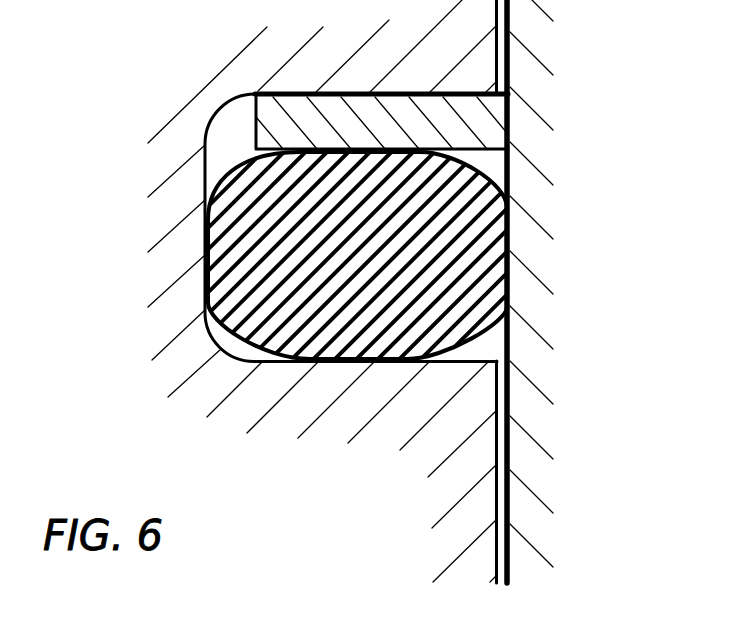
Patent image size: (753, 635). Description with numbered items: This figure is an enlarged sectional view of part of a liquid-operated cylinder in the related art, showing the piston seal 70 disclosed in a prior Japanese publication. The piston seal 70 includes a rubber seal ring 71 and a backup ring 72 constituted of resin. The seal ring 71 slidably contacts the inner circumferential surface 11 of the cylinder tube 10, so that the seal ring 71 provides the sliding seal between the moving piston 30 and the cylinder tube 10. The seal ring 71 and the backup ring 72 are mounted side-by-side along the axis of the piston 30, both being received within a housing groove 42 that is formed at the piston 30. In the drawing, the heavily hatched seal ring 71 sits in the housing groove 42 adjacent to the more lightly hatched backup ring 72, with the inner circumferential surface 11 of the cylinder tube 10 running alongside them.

The cylinder tube 10 is at (529, 556).
The inner circumferential surface 11 is at (500, 529).
The piston 30 is at (322, 309).
The housing groove 42 is at (254, 93).
The piston seal 70 is at (349, 204).
The seal ring 71 is at (492, 253).
The backup ring 72 is at (493, 123).